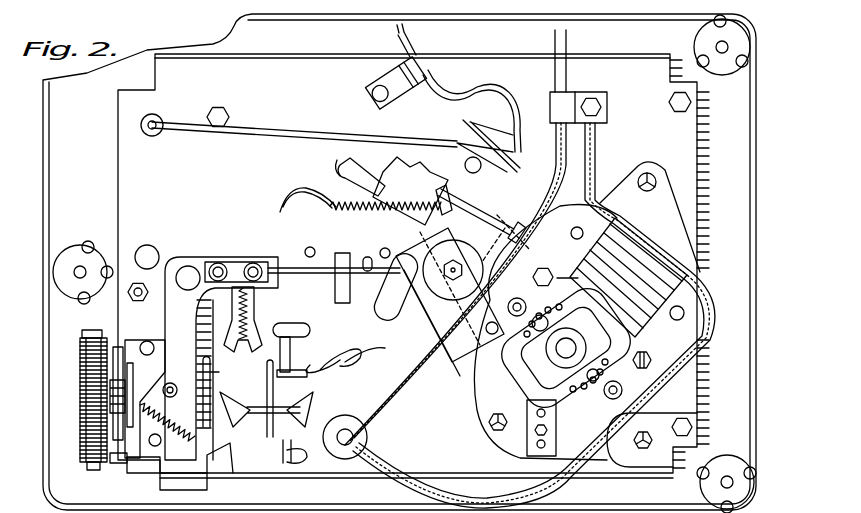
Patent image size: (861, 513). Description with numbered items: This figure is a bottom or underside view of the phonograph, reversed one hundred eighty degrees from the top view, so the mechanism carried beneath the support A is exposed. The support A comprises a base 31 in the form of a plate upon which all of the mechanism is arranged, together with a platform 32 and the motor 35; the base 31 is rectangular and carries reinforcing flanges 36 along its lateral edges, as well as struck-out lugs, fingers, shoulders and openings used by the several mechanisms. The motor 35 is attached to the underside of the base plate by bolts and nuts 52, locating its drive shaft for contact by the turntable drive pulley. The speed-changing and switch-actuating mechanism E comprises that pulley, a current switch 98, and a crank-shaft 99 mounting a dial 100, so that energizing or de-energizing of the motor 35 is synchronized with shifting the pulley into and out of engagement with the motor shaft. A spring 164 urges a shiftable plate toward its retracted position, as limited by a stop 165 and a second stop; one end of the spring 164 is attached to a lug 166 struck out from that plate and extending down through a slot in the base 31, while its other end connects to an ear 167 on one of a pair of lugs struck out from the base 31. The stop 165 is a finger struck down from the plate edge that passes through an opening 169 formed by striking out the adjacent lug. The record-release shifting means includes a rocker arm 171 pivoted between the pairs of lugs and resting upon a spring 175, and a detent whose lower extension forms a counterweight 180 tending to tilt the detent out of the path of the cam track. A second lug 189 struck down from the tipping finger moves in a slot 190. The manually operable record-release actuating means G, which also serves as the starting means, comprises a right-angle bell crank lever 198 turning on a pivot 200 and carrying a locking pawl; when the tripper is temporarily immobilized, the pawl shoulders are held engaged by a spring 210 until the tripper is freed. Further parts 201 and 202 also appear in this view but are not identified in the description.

The platform 32 is at (740, 122).
The base 31 is at (231, 188).
The reinforcing flanges 36 is at (478, 53).
The motor 35 is at (515, 360).
The bolts and nuts 52 is at (633, 345).
The current switch 98 is at (348, 460).
The crank-shaft 99 is at (245, 430).
The dial 100 is at (93, 470).
The spring 164 is at (385, 222).
The stop 165 is at (375, 170).
The lug 166 is at (318, 205).
The ear 167 is at (395, 210).
The opening 169 is at (345, 165).
The rocker arm 171 is at (470, 215).
The spring 175 is at (495, 240).
The counterweight 180 is at (361, 356).
The second lug 189 is at (307, 350).
The slot 190 is at (369, 366).
The bell crank lever 198 is at (172, 332).
The pivot 200 is at (190, 270).
The rod 201 is at (297, 268).
The bracket 202 is at (222, 478).
The spring 210 is at (250, 303).
The support A is at (137, 177).
The speed-changing and switch-actuating mechanism E is at (71, 376).
The manually operable record-release actuating means G is at (150, 470).